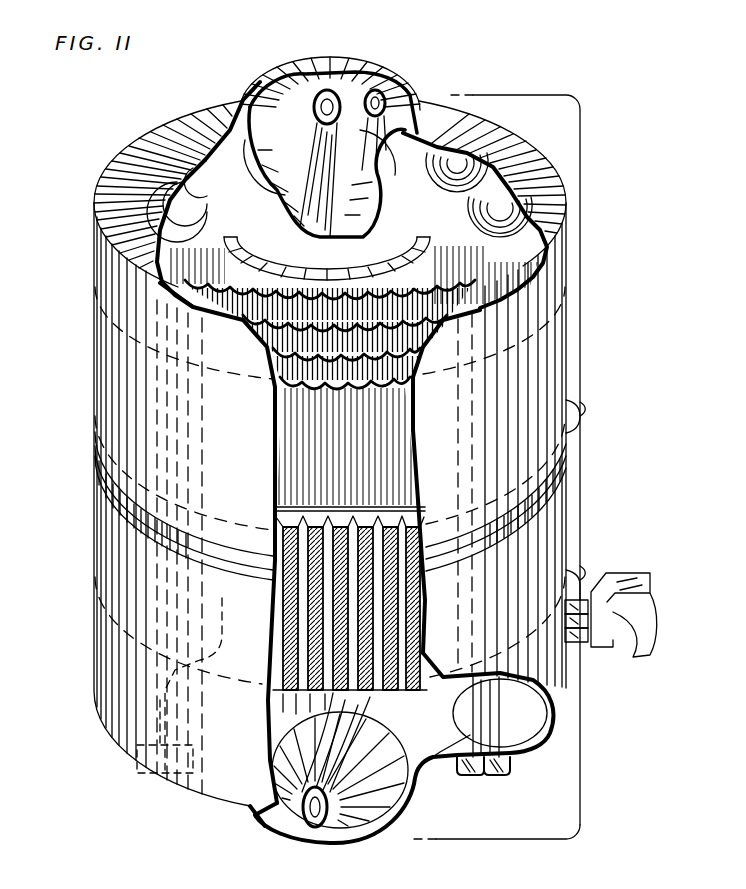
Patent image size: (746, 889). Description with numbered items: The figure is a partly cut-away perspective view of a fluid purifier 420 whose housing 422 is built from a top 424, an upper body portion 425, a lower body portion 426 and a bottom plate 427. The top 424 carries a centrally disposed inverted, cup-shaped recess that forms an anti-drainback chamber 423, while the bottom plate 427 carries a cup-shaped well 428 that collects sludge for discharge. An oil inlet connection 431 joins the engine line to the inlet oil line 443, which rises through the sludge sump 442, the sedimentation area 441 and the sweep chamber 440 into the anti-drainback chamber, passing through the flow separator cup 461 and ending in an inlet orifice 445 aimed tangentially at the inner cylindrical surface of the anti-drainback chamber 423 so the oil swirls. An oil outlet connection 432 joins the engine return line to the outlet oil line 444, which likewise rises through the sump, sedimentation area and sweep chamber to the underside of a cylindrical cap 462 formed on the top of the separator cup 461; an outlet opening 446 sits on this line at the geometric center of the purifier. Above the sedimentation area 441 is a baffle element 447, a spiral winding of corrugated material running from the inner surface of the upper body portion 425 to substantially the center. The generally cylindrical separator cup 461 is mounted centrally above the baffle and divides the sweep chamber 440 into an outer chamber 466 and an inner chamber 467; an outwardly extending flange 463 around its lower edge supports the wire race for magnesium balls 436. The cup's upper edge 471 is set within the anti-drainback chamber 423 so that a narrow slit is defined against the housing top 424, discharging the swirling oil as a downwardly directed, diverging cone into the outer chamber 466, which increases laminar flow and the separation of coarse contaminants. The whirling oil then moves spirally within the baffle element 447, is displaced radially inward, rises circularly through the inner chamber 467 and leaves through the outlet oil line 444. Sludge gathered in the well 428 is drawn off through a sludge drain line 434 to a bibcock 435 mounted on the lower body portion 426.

The fluid purifier 420 is at (529, 70).
The housing 422 is at (82, 379).
The anti-drainback chamber 423 is at (243, 99).
The top 424 is at (128, 167).
The upper body portion 425 is at (95, 275).
The lower body portion 426 is at (92, 557).
The bottom plate 427 is at (413, 133).
The cup-shaped well 428 is at (303, 827).
The oil inlet connection 431 is at (488, 775).
The oil outlet connection 432 is at (147, 773).
The sludge drain line 434 is at (360, 714).
The bibcock 435 is at (633, 618).
The magnesium balls 436 is at (213, 166).
The sweep chamber 440 is at (580, 248).
The sedimentation area 441 is at (580, 487).
The sludge sump 442 is at (580, 689).
The inlet oil line 443 is at (450, 757).
The outlet oil line 444 is at (262, 585).
The inlet orifice 445 is at (393, 93).
The outlet opening 446 is at (337, 83).
The baffle element 447 is at (292, 414).
The flow separator cup 461 is at (408, 197).
The cylindrical cap 462 is at (307, 88).
The flange 463 is at (240, 240).
The outer chamber 466 is at (170, 230).
The inner chamber 467 is at (308, 168).
The upper edge 471 is at (415, 140).